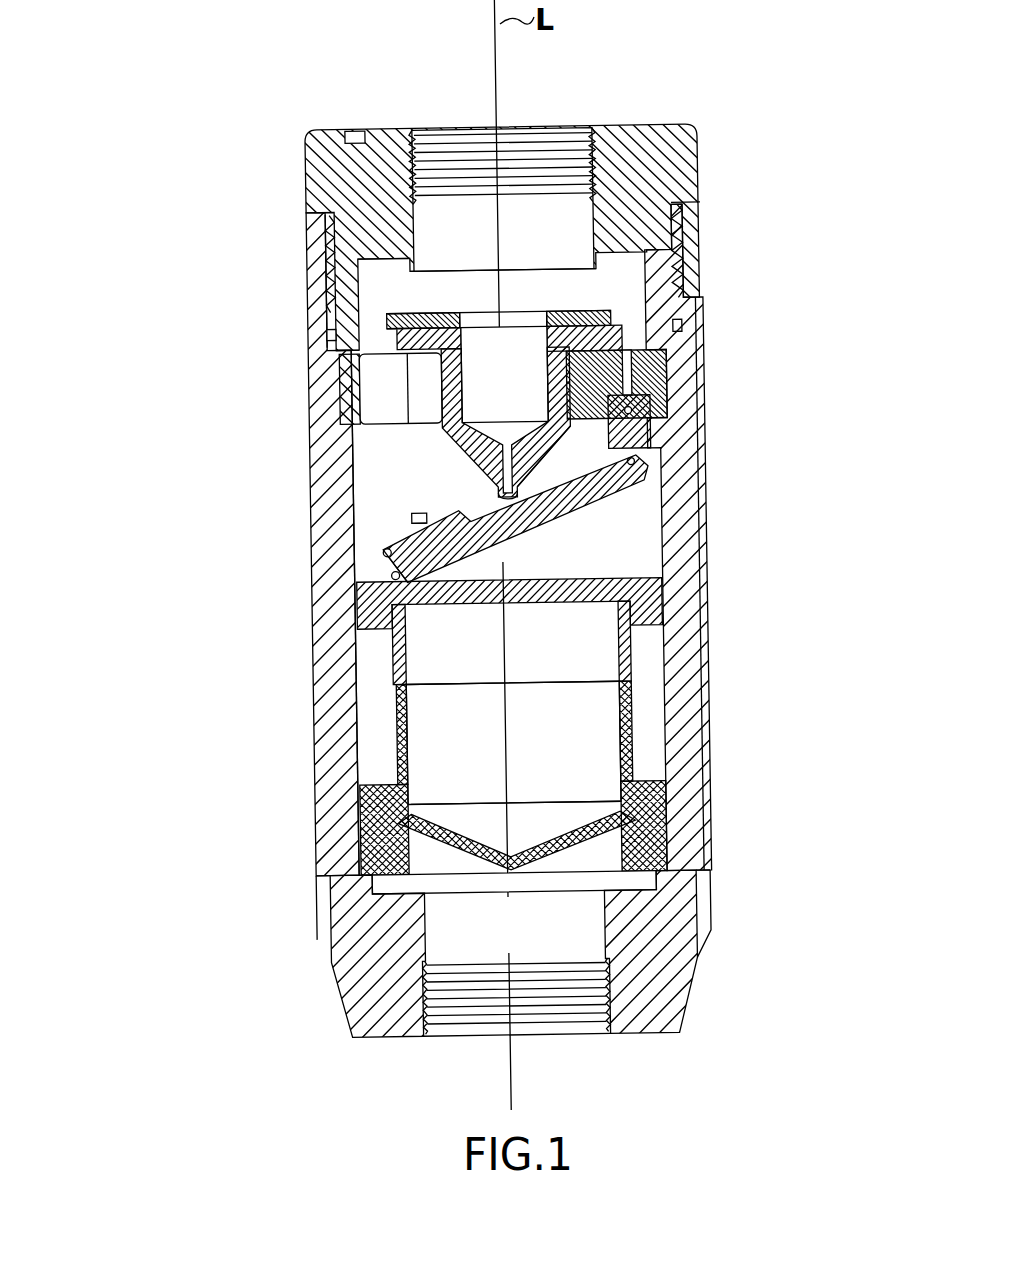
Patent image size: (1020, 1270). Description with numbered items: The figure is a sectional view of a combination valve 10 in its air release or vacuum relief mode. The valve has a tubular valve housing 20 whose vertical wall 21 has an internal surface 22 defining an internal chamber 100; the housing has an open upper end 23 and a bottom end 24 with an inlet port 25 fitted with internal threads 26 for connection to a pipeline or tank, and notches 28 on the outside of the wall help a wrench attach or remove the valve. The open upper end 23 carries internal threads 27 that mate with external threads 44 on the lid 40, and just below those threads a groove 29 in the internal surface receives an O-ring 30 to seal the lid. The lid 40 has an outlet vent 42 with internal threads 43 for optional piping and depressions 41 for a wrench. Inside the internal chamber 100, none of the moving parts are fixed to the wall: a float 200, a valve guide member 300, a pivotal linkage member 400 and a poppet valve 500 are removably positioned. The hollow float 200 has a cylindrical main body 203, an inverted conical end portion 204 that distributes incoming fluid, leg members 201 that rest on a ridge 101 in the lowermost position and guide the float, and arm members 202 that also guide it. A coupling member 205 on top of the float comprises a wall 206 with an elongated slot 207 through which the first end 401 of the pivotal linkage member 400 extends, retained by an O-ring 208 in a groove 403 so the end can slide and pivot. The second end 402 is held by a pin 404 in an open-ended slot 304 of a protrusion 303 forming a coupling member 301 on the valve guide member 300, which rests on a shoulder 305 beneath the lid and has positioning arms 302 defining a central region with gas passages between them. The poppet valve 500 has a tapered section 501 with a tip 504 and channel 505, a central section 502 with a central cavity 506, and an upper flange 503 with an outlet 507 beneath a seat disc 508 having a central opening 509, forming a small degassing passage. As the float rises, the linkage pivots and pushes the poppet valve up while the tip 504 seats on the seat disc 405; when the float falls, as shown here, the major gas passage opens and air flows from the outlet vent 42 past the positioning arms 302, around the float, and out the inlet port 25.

The combination valve 10 is at (190, 758).
The valve housing 20 is at (306, 824).
The vertical wall 21 is at (706, 627).
The internal surface 22 is at (352, 692).
The open upper end 23 is at (690, 216).
The bottom end 24 is at (670, 968).
The inlet port 25 is at (552, 1035).
The internal threads 26 is at (437, 1007).
The internal threads 27 is at (326, 262).
The notches 28 is at (702, 908).
The groove 29 is at (330, 331).
The O-ring 30 is at (630, 330).
The lid 40 is at (303, 181).
The depressions 41 is at (347, 128).
The outlet vent 42 is at (556, 128).
The internal threads 43 is at (416, 128).
The external threads 44 is at (330, 216).
The internal chamber 100 is at (630, 567).
The ridge 101 is at (366, 878).
The float 200 is at (633, 731).
The leg members 201 is at (660, 832).
The arm members 202 is at (660, 603).
The main body 203 is at (430, 752).
The end portion 204 is at (577, 850).
The coupling member 205 is at (410, 513).
The wall 206 is at (414, 520).
The elongated slot 207 is at (440, 571).
The O-ring 208 is at (384, 551).
The valve guide member 300 is at (670, 392).
The coupling member 301 is at (656, 430).
The positioning arms 302 is at (600, 370).
The protrusion 303 is at (640, 464).
The slot 304 is at (645, 462).
The shoulder 305 is at (430, 407).
The pivotal linkage member 400 is at (370, 553).
The first end 401 is at (404, 586).
The second end 402 is at (620, 485).
The groove 403 is at (393, 578).
The pin 404 is at (645, 472).
The seat disc 405 is at (600, 505).
The poppet valve 500 is at (352, 430).
The tapered section 501 is at (445, 445).
The central section 502 is at (430, 385).
The upper flange 503 is at (620, 302).
The tip 504 is at (495, 490).
The channel 505 is at (548, 500).
The central cavity 506 is at (529, 400).
The outlet 507 is at (545, 312).
The seat disc 508 is at (690, 262).
The central opening 509 is at (500, 338).